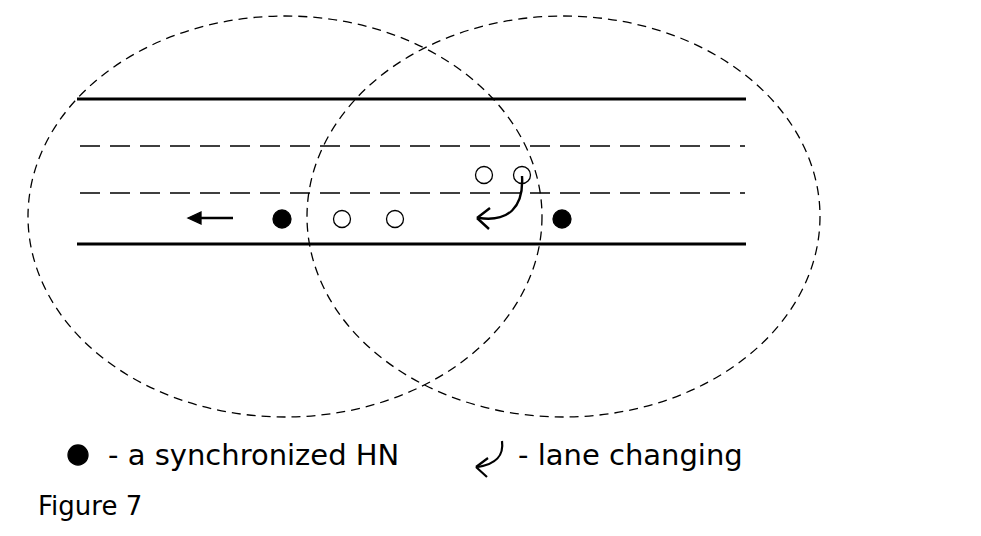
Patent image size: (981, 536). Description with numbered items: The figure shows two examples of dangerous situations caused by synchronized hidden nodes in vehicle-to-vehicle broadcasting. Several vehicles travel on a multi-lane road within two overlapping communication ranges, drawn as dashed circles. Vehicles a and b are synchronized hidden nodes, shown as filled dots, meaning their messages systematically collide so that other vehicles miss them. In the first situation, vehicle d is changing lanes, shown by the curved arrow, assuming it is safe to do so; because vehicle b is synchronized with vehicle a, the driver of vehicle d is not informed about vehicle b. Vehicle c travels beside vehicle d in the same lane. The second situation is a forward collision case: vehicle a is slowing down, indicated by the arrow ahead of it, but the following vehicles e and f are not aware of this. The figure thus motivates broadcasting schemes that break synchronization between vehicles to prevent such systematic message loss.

The vehicle a is at (282, 198).
The vehicle b is at (561, 198).
The vehicle c is at (484, 152).
The vehicle d is at (522, 152).
The vehicle e is at (342, 198).
The vehicle f is at (396, 198).